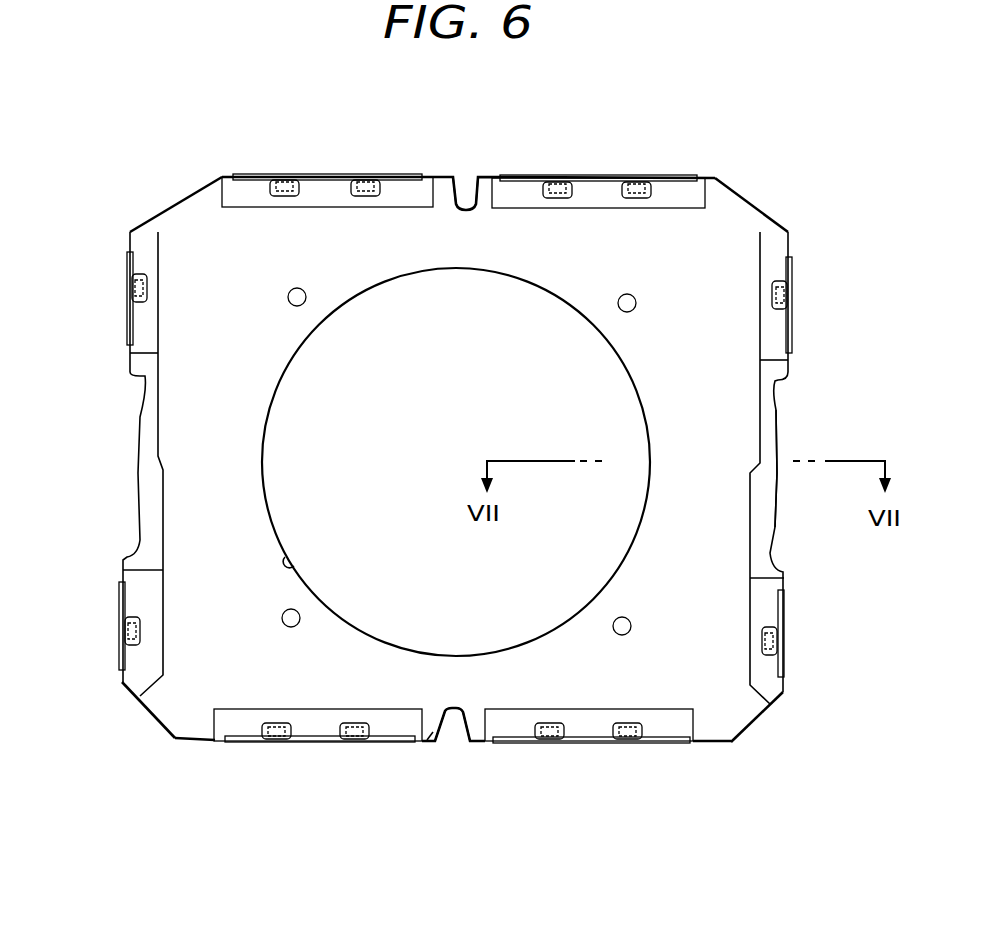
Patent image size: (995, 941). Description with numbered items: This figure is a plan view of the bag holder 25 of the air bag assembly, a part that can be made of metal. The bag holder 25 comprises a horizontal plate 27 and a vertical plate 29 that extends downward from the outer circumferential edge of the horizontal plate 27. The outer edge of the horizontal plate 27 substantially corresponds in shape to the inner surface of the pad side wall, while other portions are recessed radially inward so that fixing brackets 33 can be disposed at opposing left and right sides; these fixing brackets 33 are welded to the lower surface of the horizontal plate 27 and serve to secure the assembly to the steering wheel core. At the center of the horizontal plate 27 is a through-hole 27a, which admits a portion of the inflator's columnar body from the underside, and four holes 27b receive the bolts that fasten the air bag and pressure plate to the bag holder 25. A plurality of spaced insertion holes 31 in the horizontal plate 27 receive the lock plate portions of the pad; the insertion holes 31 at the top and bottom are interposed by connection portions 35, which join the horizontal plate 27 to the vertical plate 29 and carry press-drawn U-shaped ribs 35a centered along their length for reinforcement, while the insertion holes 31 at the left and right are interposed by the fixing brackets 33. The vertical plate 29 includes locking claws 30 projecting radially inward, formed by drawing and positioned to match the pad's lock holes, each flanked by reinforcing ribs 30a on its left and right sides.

The bag holder 25 is at (772, 196).
The horizontal plate 27 is at (222, 268).
The through-hole 27a is at (288, 562).
The holes 27b is at (305, 290).
The vertical plate 29 is at (365, 174).
The locking claws 30 is at (285, 180).
The reinforcing ribs 30a is at (308, 185).
The insertion holes 31 is at (237, 190).
The fixing brackets 33 is at (768, 420).
The connection portions 35 is at (483, 195).
The U-shaped ribs 35a is at (465, 200).